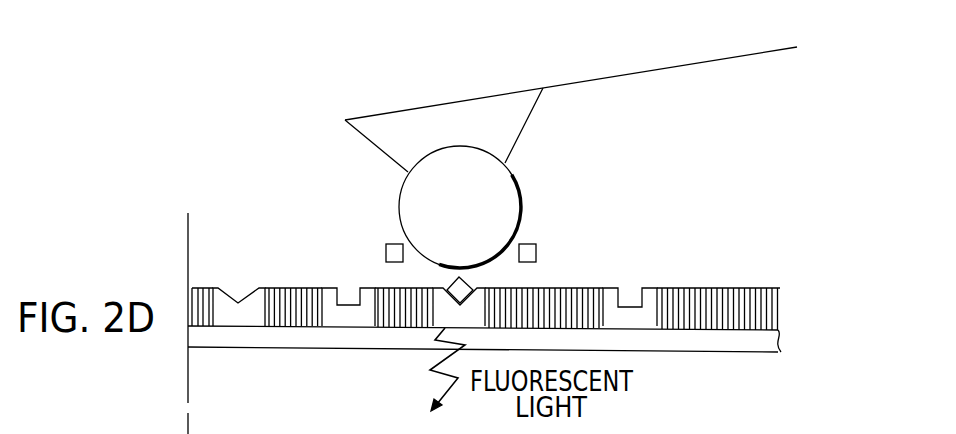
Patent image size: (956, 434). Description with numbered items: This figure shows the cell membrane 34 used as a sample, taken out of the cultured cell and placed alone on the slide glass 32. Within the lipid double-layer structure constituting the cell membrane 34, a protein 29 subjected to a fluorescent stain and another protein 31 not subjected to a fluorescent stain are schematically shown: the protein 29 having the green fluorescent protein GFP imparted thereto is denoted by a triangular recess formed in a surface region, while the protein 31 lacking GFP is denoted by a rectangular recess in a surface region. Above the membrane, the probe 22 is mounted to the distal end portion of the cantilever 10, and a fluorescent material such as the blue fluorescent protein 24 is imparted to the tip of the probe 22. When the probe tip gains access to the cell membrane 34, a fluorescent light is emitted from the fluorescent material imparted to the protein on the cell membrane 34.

The cantilever 10 is at (708, 63).
The probe 22 is at (525, 128).
The blue fluorescent protein (BFP) 24 is at (537, 253).
The protein subjected to a fluorescent stain 29 is at (264, 287).
The protein not subjected to a fluorescent stain 31 is at (352, 305).
The slide glass 32 is at (748, 353).
The cell membrane 34 is at (753, 292).